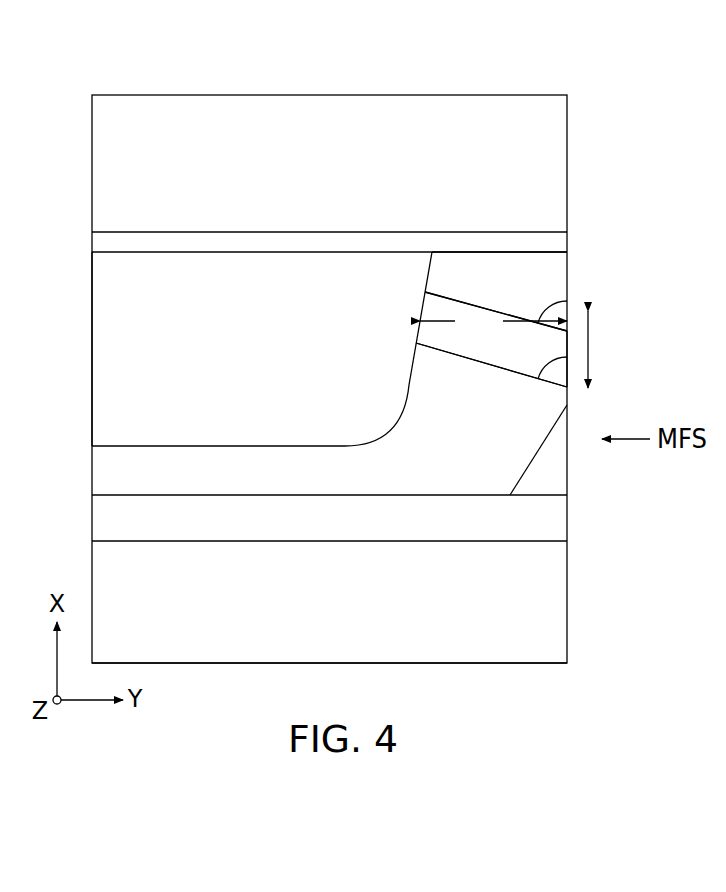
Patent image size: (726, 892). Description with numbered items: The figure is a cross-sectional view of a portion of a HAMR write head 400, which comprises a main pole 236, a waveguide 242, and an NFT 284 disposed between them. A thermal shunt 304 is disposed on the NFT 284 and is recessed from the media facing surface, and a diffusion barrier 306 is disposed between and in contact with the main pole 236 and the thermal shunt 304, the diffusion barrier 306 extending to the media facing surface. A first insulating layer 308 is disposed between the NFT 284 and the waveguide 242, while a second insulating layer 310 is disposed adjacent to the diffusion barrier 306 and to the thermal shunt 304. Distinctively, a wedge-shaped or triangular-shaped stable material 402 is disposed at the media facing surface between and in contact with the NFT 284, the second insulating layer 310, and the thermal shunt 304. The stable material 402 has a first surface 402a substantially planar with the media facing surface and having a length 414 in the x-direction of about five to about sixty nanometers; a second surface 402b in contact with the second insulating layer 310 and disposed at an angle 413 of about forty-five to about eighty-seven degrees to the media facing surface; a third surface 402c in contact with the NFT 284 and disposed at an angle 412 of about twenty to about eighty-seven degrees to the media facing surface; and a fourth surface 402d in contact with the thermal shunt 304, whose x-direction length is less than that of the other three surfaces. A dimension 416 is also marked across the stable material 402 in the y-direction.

The HAMR write head 400 is at (135, 60).
The main pole 236 is at (310, 205).
The diffusion barrier 306 is at (555, 242).
The thermal shunt 304 is at (192, 342).
The NFT 284 is at (386, 469).
The fourth surface 402d is at (419, 320).
The second insulating layer 310 is at (447, 282).
The second surface 402b is at (425, 292).
The third surface 402c is at (483, 363).
The stable material 402 is at (502, 359).
The first surface 402a is at (568, 330).
The angle 413 is at (545, 307).
The angle 412 is at (569, 382).
The notch depth 416 is at (493, 324).
The length 414 is at (613, 349).
The first insulating layer 308 is at (245, 530).
The waveguide 242 is at (271, 631).